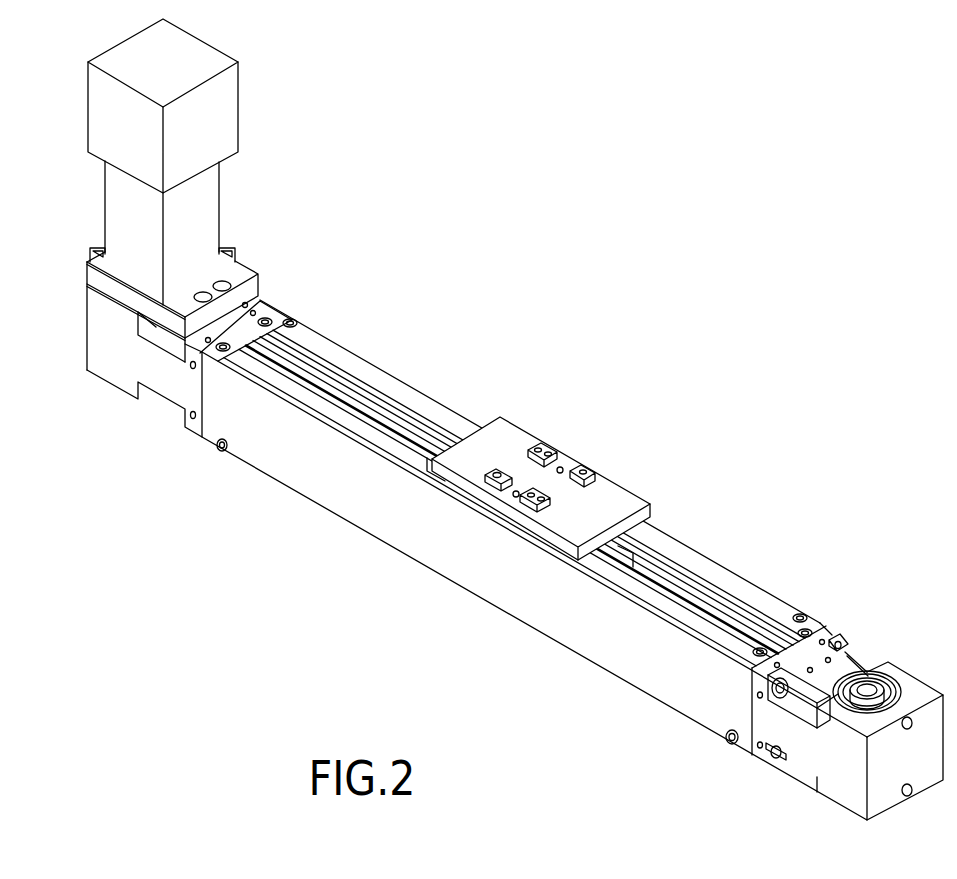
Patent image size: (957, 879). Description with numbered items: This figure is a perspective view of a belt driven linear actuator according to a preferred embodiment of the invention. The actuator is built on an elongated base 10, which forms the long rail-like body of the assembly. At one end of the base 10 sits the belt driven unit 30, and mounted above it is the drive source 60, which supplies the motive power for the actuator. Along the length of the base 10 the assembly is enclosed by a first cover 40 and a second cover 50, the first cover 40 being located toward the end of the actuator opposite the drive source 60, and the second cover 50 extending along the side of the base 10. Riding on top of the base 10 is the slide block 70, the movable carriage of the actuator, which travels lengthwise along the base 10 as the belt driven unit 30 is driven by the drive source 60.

The base 10 is at (325, 372).
The belt driven unit 30 is at (102, 378).
The first cover 40 is at (730, 572).
The second cover 50 is at (408, 556).
The drive source 60 is at (242, 103).
The slide block 70 is at (518, 432).